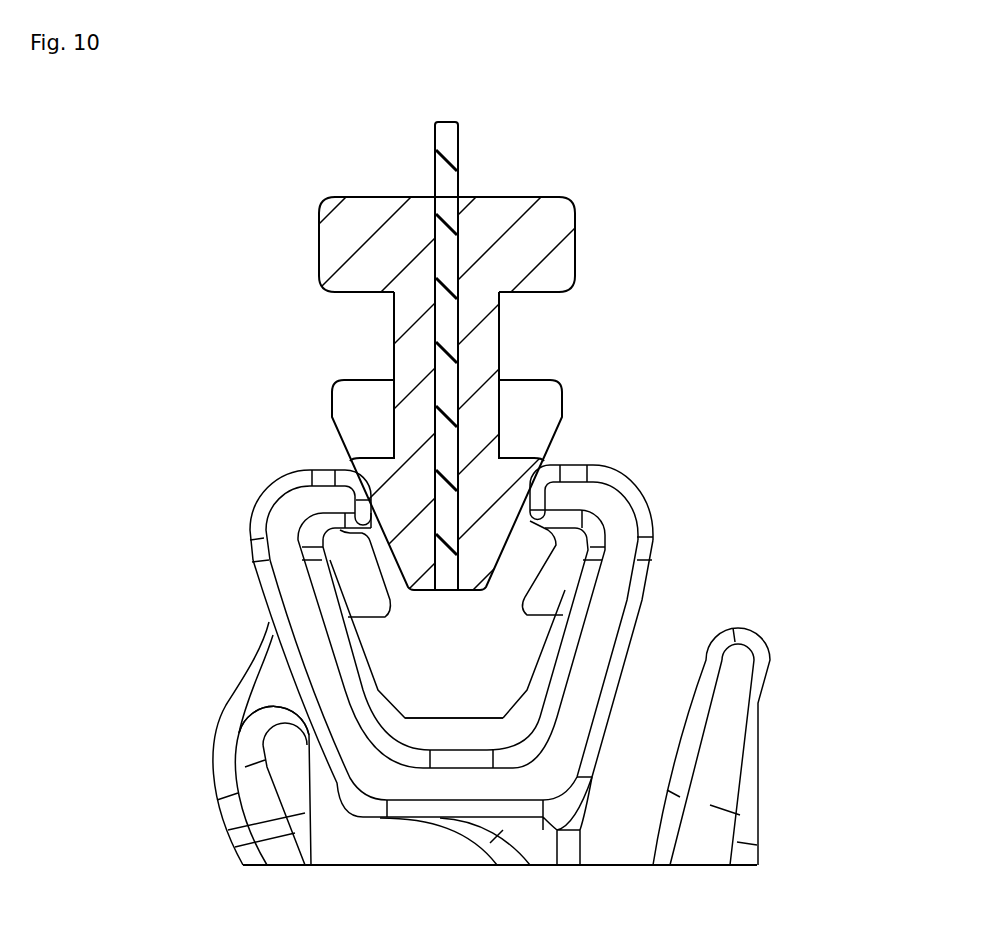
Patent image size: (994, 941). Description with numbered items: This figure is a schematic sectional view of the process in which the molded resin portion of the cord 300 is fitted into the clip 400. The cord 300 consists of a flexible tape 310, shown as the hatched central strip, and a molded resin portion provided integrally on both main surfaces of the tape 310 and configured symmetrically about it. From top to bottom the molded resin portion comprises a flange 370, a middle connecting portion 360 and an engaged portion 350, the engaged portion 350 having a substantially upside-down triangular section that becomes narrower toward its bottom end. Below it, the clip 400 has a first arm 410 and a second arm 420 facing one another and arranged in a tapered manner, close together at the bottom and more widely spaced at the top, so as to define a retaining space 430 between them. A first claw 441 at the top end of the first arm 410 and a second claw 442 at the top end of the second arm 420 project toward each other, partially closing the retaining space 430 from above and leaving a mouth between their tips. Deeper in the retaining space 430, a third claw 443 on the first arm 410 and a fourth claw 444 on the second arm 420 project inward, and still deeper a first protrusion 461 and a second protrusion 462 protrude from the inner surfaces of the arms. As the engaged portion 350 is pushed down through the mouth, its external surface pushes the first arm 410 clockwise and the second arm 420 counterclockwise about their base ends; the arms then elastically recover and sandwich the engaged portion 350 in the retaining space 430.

The cord 300 is at (284, 229).
The tape 310 is at (443, 148).
The engaged portion 350 is at (477, 533).
The middle connecting portion 360 is at (487, 333).
The flange 370 is at (545, 226).
The socket terminal 400 is at (141, 841).
The first arm 410 is at (282, 513).
The second arm 420 is at (597, 637).
The retaining space 430 is at (424, 669).
The first claw 441 is at (340, 500).
The second claw 442 is at (554, 500).
The third claw 443 is at (357, 579).
The fourth claw 444 is at (593, 603).
The first protrusion 461 is at (397, 685).
The second protrusion 462 is at (522, 686).